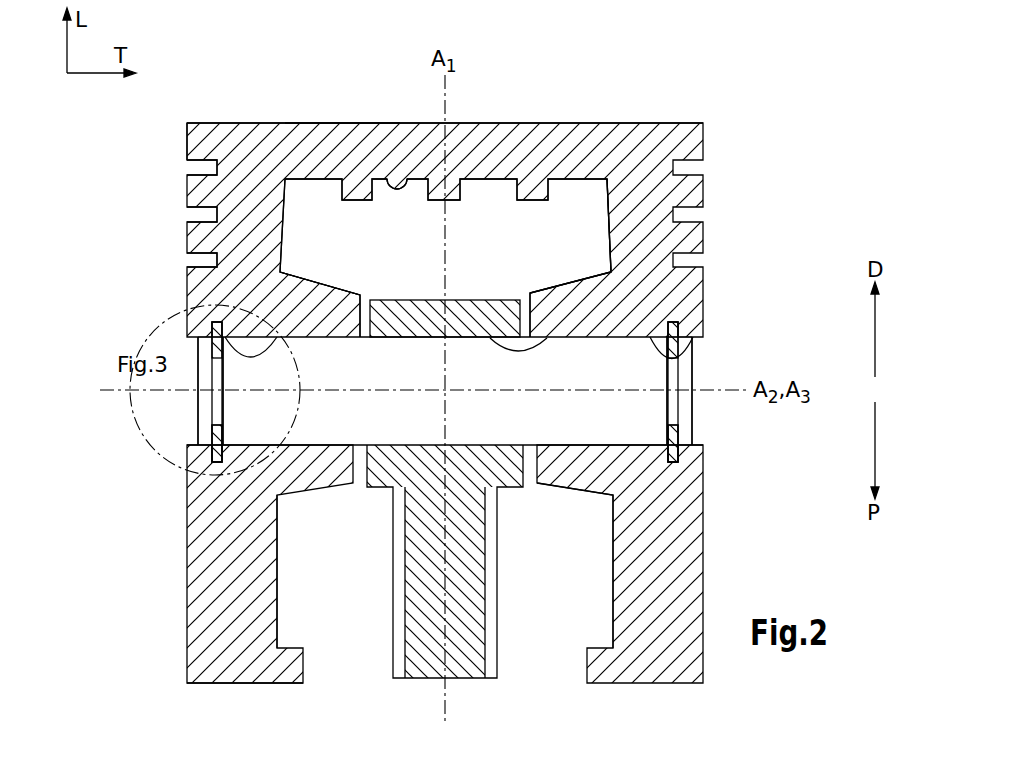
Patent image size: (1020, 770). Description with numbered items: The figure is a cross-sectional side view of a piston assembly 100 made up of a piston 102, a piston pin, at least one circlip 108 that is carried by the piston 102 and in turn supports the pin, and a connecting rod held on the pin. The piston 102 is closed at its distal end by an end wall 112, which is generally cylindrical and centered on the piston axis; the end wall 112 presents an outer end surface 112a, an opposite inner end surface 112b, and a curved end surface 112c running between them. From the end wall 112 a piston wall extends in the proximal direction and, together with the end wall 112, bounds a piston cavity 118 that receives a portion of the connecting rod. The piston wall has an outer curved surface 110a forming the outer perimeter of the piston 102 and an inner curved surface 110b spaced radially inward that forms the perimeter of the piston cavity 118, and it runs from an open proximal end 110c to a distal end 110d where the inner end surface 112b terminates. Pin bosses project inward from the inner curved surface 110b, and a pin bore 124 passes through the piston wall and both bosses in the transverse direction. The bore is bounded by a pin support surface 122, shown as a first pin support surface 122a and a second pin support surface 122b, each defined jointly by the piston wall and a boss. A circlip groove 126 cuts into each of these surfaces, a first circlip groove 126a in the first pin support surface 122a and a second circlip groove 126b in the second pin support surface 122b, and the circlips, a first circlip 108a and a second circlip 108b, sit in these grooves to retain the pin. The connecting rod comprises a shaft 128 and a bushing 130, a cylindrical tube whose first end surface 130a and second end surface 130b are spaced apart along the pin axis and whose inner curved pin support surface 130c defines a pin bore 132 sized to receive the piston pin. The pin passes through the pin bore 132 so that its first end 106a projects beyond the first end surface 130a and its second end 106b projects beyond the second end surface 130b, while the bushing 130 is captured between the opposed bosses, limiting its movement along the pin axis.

The piston assembly 100 is at (768, 120).
The piston 102 is at (201, 121).
The first end of the piston pin 106a is at (253, 350).
The second end of the piston pin 106b is at (620, 357).
The circlip 108 is at (443, 412).
The first circlip 108a is at (210, 430).
The second circlip 108b is at (682, 432).
The outer curved surface 110a is at (185, 660).
The inner curved surface 110b is at (278, 593).
The proximal end of the piston wall 110c is at (242, 683).
The distal end of the piston wall 110d is at (185, 215).
The end wall 112 is at (290, 152).
The outer end surface 112a is at (338, 122).
The inner end surface 112b is at (410, 178).
The curved end surface 112c is at (187, 152).
The piston cavity 118 is at (542, 640).
The pin support surface 122 is at (441, 376).
The first pin support surface 122a is at (212, 326).
The second pin support surface 122b is at (678, 326).
The pin bore 124 is at (185, 427).
The circlip groove 126 is at (445, 492).
The first circlip groove 126a is at (217, 462).
The second circlip groove 126b is at (673, 462).
The shaft 128 is at (460, 660).
The bushing 130 is at (473, 298).
The first end surface 130a is at (357, 293).
The second end surface 130b is at (515, 371).
The inner curved pin support surface 130c is at (612, 222).
The pin bore of the bushing 132 is at (520, 308).